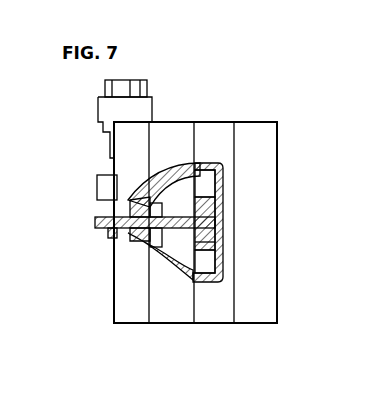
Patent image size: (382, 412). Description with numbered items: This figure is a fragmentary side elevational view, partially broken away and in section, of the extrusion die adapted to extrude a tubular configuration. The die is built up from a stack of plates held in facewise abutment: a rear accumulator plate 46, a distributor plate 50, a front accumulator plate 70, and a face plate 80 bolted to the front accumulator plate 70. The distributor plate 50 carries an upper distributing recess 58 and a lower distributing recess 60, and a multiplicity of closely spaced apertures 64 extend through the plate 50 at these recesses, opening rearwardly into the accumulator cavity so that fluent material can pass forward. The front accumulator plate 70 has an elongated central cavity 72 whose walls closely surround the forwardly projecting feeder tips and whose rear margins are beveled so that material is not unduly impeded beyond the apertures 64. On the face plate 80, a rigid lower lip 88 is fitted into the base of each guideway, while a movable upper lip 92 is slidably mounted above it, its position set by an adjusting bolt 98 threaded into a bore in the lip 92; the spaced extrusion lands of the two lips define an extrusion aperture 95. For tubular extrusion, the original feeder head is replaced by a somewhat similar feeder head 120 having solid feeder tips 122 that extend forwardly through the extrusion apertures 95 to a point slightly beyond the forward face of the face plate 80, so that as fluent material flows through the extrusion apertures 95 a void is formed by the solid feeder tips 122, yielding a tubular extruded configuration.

The rear accumulator plate 46 is at (257, 323).
The distributor plate 50 is at (220, 323).
The upper distributing recess 58 is at (209, 177).
The lower distributing recess 60 is at (203, 283).
The apertures 64 is at (217, 272).
The front accumulator plate 70 is at (178, 323).
The elongated central cavity 72 is at (182, 190).
The face plate 80 is at (128, 323).
The lower lip 88 is at (112, 242).
The movable upper lip 92 is at (127, 202).
The extrusion aperture 95 is at (112, 216).
The adjusting bolt 98 is at (145, 82).
The feeder head 120 is at (225, 238).
The solid feeder tips 122 is at (103, 229).